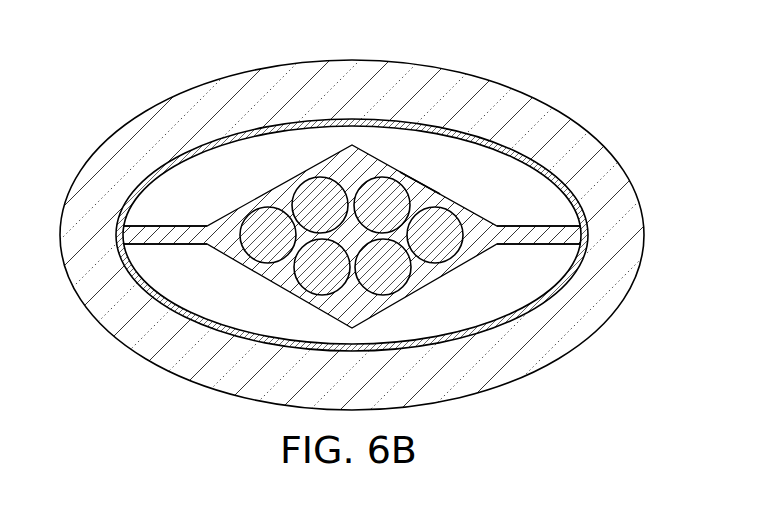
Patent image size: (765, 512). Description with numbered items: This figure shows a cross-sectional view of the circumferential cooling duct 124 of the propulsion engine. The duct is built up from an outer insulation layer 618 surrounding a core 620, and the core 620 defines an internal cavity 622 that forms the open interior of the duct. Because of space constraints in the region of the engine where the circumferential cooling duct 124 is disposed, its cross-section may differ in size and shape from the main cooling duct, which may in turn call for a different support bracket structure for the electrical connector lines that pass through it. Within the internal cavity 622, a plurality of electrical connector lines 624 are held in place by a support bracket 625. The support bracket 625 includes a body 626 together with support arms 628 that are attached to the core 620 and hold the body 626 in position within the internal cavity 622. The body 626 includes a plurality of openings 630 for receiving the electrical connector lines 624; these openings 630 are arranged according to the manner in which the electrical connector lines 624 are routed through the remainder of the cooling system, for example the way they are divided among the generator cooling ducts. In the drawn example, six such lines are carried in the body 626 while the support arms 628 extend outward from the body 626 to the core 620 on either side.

The circumferential cooling duct 124 is at (121, 101).
The insulation layer 618 is at (542, 117).
The core 620 is at (560, 178).
The internal cavity 622 is at (258, 322).
The electrical connector lines 624 is at (265, 256).
The support bracket 625 is at (278, 200).
The body 626 is at (355, 157).
The support arms 628 is at (172, 237).
The openings 630 is at (417, 190).